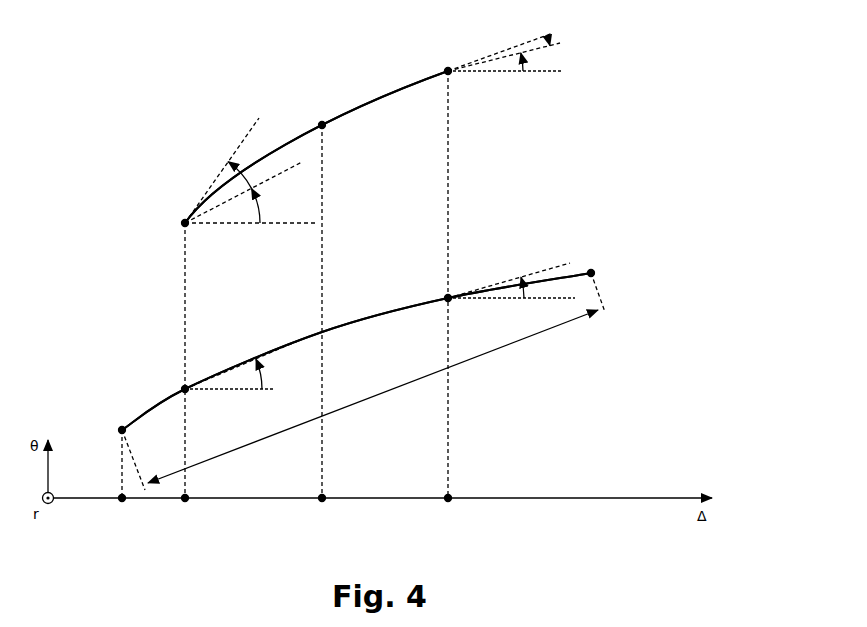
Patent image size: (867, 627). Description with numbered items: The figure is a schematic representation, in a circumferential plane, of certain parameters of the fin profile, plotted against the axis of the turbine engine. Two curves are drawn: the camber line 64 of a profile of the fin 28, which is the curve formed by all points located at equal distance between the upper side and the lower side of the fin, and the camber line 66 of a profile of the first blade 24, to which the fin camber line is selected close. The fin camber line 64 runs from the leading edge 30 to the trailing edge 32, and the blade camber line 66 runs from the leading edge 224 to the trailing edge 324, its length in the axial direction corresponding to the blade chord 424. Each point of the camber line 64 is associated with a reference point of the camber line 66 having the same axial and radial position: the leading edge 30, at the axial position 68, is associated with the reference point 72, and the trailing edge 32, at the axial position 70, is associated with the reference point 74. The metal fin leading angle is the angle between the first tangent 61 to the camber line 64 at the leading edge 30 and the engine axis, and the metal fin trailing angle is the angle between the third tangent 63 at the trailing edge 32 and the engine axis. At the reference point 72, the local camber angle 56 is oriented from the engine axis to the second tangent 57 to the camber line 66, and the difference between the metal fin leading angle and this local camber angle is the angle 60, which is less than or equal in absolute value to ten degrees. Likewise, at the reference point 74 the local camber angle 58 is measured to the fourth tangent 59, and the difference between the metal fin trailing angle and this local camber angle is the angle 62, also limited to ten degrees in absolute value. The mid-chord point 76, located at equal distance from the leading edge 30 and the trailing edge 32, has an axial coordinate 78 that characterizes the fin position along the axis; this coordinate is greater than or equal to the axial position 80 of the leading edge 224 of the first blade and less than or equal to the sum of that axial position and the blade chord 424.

The first blade 24 is at (140, 298).
The fin 28 is at (240, 88).
The leading edge 30 is at (183, 223).
The trailing edge 32 is at (446, 68).
The local camber angle 56 is at (263, 207).
The second tangent 57 is at (261, 351).
The local camber angle 58 is at (530, 62).
The fourth tangent 59 is at (536, 272).
The angle 60 is at (238, 162).
The first tangent 61 is at (243, 140).
The angle 62 is at (555, 41).
The third tangent 63 is at (497, 52).
The camber line 64 is at (383, 95).
The camber line 66 is at (371, 316).
The axial position 68 is at (184, 501).
The axial position 70 is at (447, 501).
The reference point 72 is at (183, 388).
The reference point 74 is at (446, 296).
The mid-chord point 76 is at (320, 122).
The axial coordinate 78 is at (321, 501).
The axial position 80 is at (121, 501).
The leading edge 224 is at (120, 429).
The trailing edge 324 is at (594, 273).
The blade chord 424 is at (370, 398).